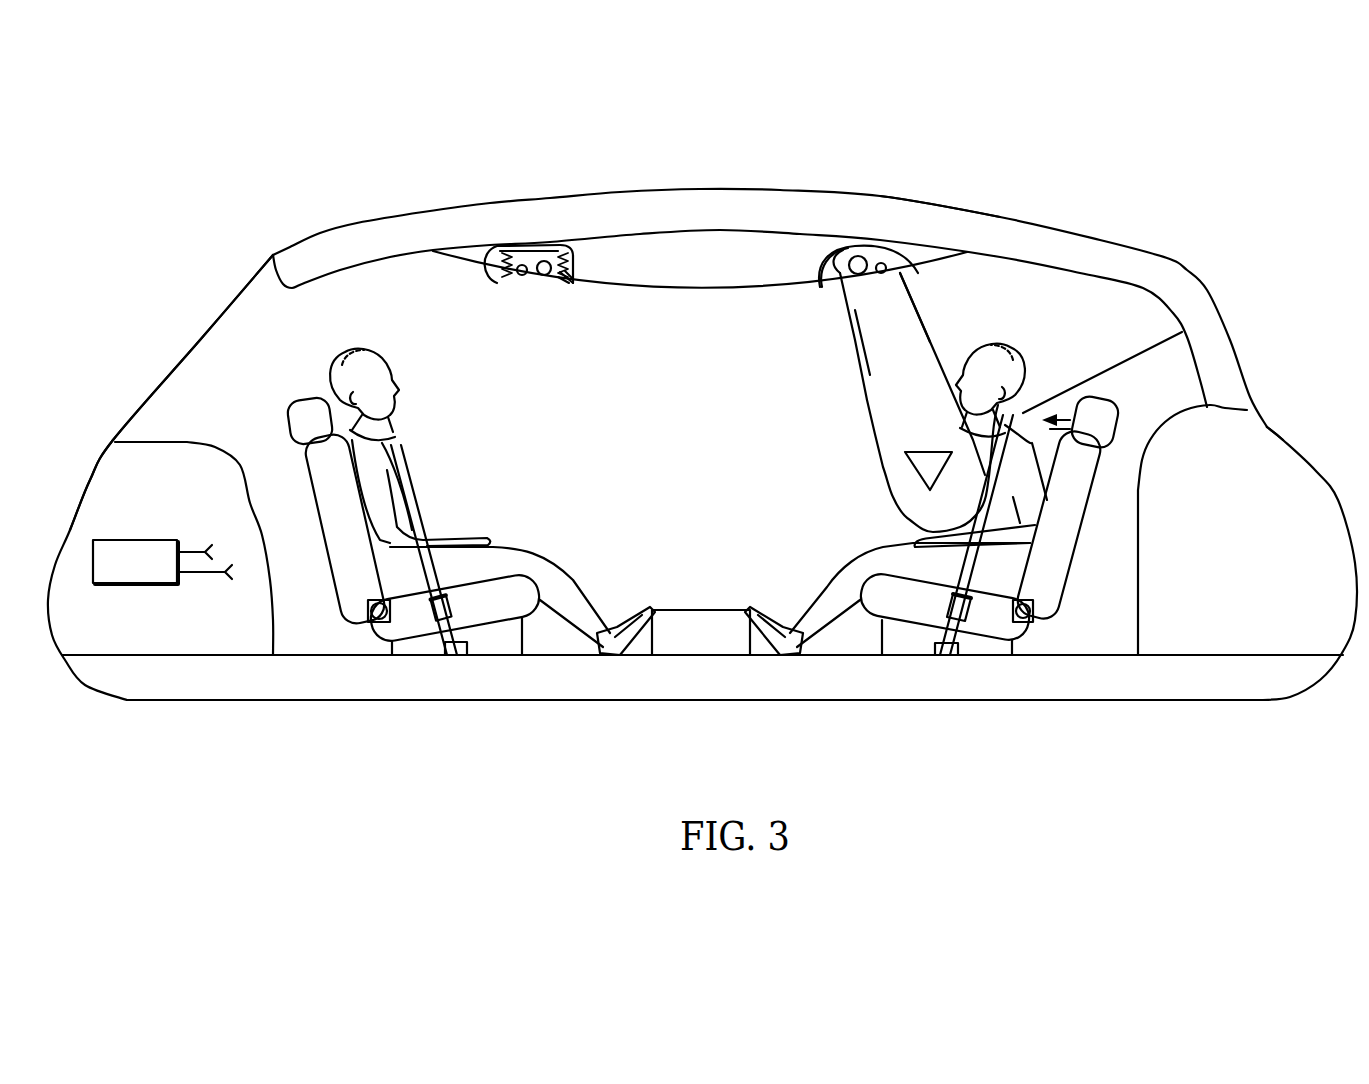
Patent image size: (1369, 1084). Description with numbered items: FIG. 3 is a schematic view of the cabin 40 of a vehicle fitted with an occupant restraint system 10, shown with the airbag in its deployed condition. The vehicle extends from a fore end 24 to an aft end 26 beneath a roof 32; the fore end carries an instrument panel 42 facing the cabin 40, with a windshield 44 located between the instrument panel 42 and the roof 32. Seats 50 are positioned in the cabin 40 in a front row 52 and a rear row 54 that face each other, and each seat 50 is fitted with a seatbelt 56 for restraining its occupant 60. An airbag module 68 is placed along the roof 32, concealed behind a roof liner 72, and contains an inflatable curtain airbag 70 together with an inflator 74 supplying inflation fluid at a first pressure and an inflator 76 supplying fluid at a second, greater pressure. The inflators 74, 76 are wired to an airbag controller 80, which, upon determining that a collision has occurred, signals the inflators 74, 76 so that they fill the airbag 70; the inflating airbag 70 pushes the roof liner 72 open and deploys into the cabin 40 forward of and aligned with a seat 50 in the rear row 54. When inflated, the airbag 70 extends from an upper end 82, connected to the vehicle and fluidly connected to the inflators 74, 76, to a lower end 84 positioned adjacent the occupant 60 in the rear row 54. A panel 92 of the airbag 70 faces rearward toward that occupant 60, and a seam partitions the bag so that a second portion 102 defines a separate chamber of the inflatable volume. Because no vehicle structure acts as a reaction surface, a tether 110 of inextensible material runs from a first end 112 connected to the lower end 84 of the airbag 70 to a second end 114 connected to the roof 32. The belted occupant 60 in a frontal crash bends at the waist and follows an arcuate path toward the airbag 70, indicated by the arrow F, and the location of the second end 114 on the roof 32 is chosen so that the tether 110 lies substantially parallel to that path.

The occupant restraint system 10 is at (918, 240).
The fore end 24 is at (127, 378).
The aft end 26 is at (1289, 384).
The roof 32 is at (1028, 240).
The passenger cabin 40 is at (687, 454).
The instrument panel 42 is at (210, 447).
The windshield 44 is at (190, 345).
The seat 50 is at (352, 595).
The front row 52 is at (438, 718).
The rear row 54 is at (947, 718).
The seatbelt 56 is at (420, 517).
The occupant 60 is at (393, 473).
The airbag module 68 is at (485, 260).
The inflatable curtain airbag 70 is at (574, 262).
The roof liner 72 is at (682, 293).
The inflator 74 is at (522, 276).
The inflator 76 is at (545, 276).
The airbag controller 80 is at (137, 552).
The upper end 82 is at (838, 254).
The lower end 84 is at (865, 472).
The panel 92 is at (918, 297).
The second portion 102 is at (867, 312).
The tether 110 is at (1085, 368).
The first end 112 is at (893, 477).
The second end 114 is at (1141, 352).
The arrow F is at (1150, 437).